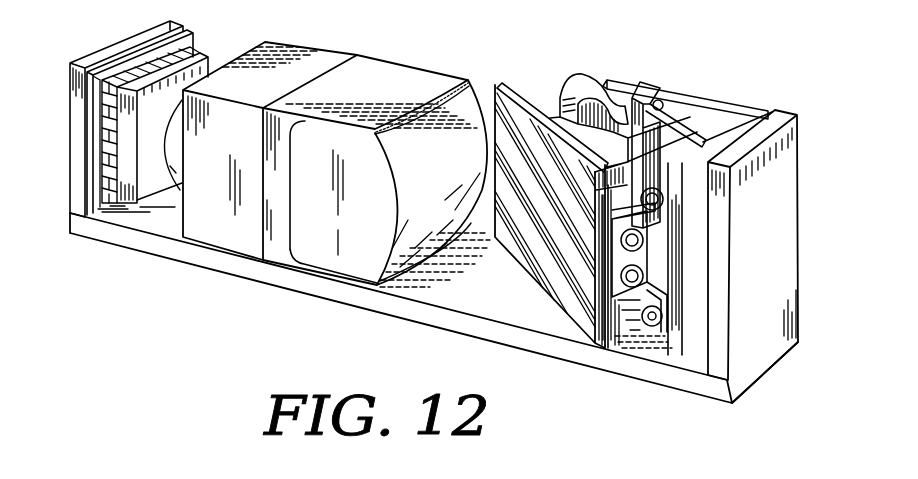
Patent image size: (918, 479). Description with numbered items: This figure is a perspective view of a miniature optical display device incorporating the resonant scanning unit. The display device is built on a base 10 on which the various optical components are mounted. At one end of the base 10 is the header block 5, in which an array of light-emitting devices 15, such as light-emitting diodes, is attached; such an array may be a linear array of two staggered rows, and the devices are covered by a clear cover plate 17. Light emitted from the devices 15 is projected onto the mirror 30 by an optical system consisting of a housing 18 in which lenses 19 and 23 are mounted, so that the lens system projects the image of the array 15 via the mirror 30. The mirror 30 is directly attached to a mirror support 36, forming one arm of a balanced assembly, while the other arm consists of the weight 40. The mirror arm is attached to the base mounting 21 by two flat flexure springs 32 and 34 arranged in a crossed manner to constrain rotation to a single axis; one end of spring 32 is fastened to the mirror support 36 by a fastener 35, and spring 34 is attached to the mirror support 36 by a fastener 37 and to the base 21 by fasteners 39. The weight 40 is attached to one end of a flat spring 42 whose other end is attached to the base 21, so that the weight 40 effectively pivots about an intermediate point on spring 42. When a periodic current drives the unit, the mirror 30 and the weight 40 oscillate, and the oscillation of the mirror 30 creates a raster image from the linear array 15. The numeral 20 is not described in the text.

The header block 5 is at (73, 78).
The base 10 is at (197, 255).
The array of light-emitting devices 15 is at (103, 133).
The clear cover plate 17 is at (213, 62).
The housing 18 is at (368, 72).
The lens 19 is at (170, 182).
The end wall 20 is at (748, 212).
The base mounting 21 is at (724, 130).
The lens 23 is at (340, 260).
The mirror 30 is at (492, 98).
The flexure spring 32 is at (617, 252).
The flexure spring 34 is at (659, 103).
The fastener 35 is at (643, 275).
The mirror support 36 is at (560, 118).
The fastener 37 is at (626, 137).
The fasteners 39 is at (665, 203).
The weight 40 is at (574, 72).
The spring 42 is at (684, 115).